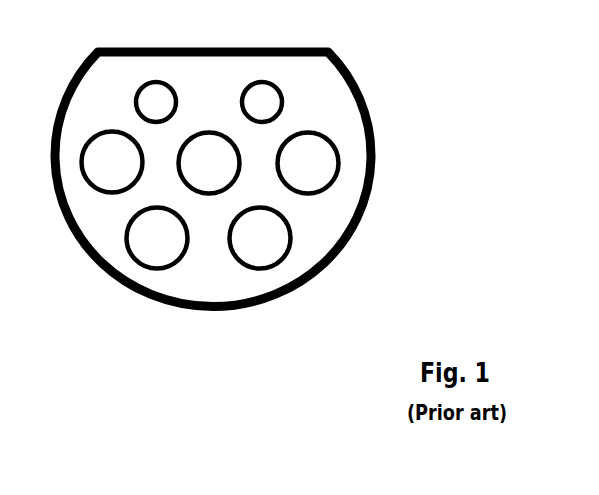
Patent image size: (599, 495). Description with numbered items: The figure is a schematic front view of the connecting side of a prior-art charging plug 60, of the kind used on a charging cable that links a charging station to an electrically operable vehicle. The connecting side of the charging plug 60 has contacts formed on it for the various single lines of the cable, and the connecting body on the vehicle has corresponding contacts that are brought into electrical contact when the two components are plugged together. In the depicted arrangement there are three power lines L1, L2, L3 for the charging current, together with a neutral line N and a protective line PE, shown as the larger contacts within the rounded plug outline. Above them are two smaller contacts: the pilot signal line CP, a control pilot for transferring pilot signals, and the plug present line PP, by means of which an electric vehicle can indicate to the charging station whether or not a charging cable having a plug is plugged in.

The charging plug 60 is at (274, 179).
The plug present line PP is at (156, 102).
The pilot signal line CP is at (262, 102).
The neutral line N is at (112, 162).
The protective line PE is at (209, 163).
The power line L1 is at (308, 163).
The power line L2 is at (260, 238).
The power line L3 is at (157, 238).